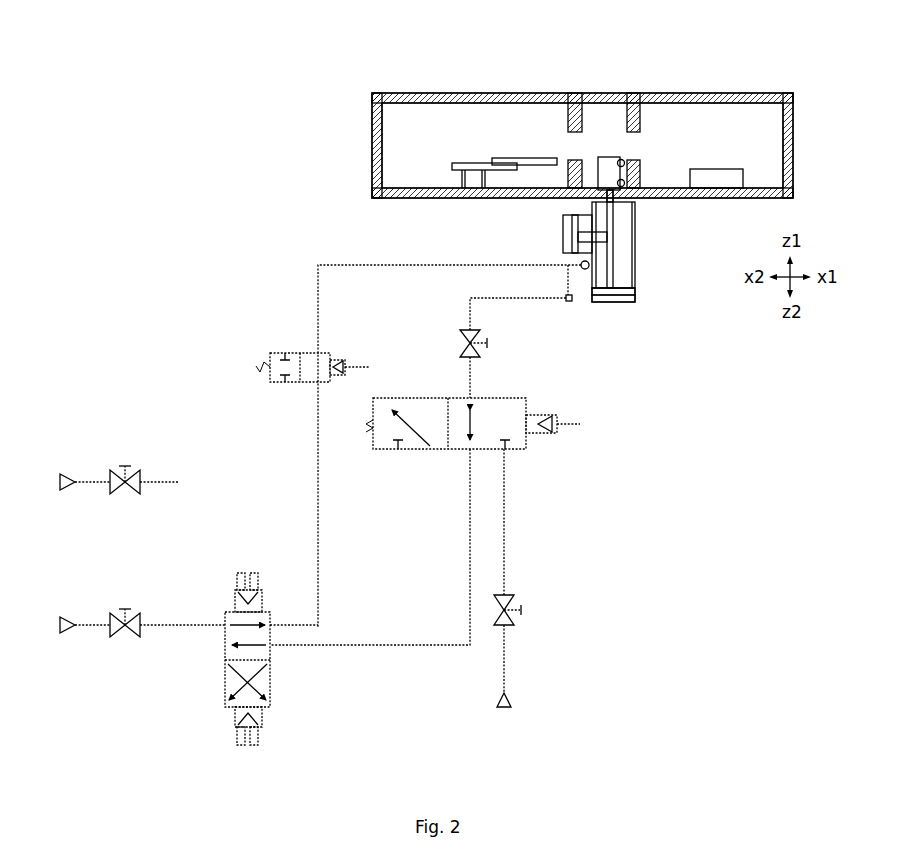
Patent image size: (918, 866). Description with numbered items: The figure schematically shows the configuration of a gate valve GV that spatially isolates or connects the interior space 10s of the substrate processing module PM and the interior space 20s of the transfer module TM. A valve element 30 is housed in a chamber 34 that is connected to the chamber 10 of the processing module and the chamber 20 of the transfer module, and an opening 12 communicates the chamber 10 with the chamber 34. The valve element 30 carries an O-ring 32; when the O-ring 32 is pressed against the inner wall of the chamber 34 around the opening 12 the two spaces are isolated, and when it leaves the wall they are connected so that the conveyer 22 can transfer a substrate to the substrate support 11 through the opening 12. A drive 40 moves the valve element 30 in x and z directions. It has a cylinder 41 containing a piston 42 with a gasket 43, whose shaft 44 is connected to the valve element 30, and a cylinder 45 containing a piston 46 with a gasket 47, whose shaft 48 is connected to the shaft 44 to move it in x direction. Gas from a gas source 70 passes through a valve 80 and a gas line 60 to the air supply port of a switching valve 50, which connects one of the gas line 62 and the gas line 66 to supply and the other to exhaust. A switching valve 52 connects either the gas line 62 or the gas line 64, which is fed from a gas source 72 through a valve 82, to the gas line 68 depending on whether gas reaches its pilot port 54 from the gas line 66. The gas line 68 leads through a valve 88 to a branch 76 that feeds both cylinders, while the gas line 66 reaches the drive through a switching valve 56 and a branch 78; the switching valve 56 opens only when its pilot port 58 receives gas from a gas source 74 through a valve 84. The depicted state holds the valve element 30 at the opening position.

The transfer module TM is at (446, 73).
The substrate processing module PM is at (745, 78).
The gate valve GV is at (652, 390).
The chamber 10 is at (715, 93).
The interior space 10s is at (687, 114).
The substrate support 11 is at (718, 169).
The opening 12 is at (642, 147).
The chamber 20 is at (470, 93).
The interior space 20s is at (515, 116).
The conveyer 22 is at (487, 156).
The valve element 30 is at (607, 157).
The O-ring 32 is at (620, 159).
The chamber 34 is at (603, 93).
The drive 40 is at (614, 272).
The cylinder 41 is at (615, 303).
The piston 42 is at (628, 303).
The gasket 43 is at (635, 290).
The shaft 44 is at (618, 243).
The cylinder 45 is at (563, 234).
The piston 46 is at (578, 240).
The gasket 47 is at (575, 217).
The shaft 48 is at (597, 252).
The switching valve 50 is at (270, 696).
The switching valve 52 is at (473, 423).
The pilot port 54 is at (540, 414).
The switching valve 56 is at (323, 346).
The pilot port 58 is at (346, 360).
The gas line 60 is at (188, 625).
The gas line 62 is at (362, 645).
The gas line 64 is at (506, 502).
The gas line 66 is at (320, 476).
The gas line 68 is at (473, 368).
The gas source 70 is at (72, 620).
The gas source 72 is at (508, 698).
The gas source 74 is at (72, 478).
The branch 76 is at (569, 302).
The branch 78 is at (585, 270).
The valve 80 is at (140, 616).
The valve 82 is at (508, 596).
The valve 84 is at (140, 470).
The valve 88 is at (466, 330).